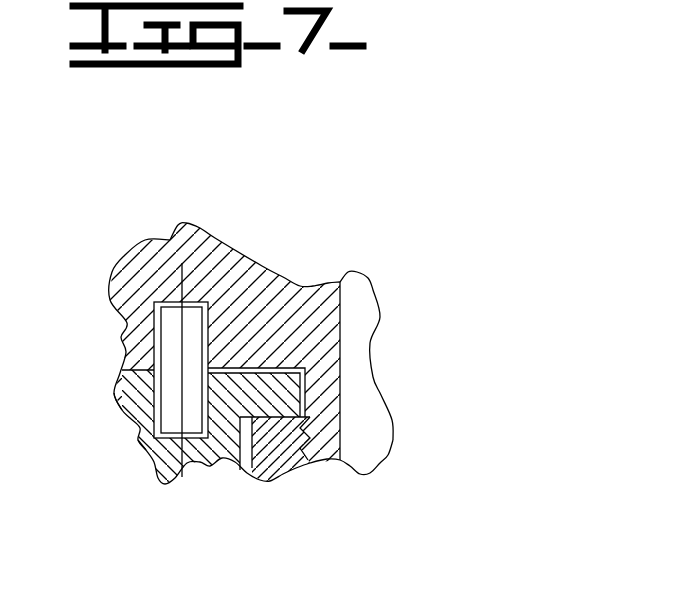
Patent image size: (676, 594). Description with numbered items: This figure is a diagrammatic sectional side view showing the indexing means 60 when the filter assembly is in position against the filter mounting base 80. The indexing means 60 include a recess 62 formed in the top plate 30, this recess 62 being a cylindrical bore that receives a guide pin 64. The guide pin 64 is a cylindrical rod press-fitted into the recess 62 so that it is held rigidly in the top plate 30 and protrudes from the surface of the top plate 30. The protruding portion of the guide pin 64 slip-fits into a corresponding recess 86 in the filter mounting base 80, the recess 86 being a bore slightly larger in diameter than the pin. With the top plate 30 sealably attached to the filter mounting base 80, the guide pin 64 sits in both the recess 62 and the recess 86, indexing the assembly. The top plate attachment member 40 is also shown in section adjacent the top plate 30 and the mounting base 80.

The top plate 30 is at (160, 453).
The top plate attachment member 40 is at (278, 463).
The indexing means 60 is at (392, 378).
The recess 62 is at (156, 414).
The guide pin 64 is at (172, 351).
The filter mounting base 80 is at (298, 318).
The recess 86 is at (150, 327).